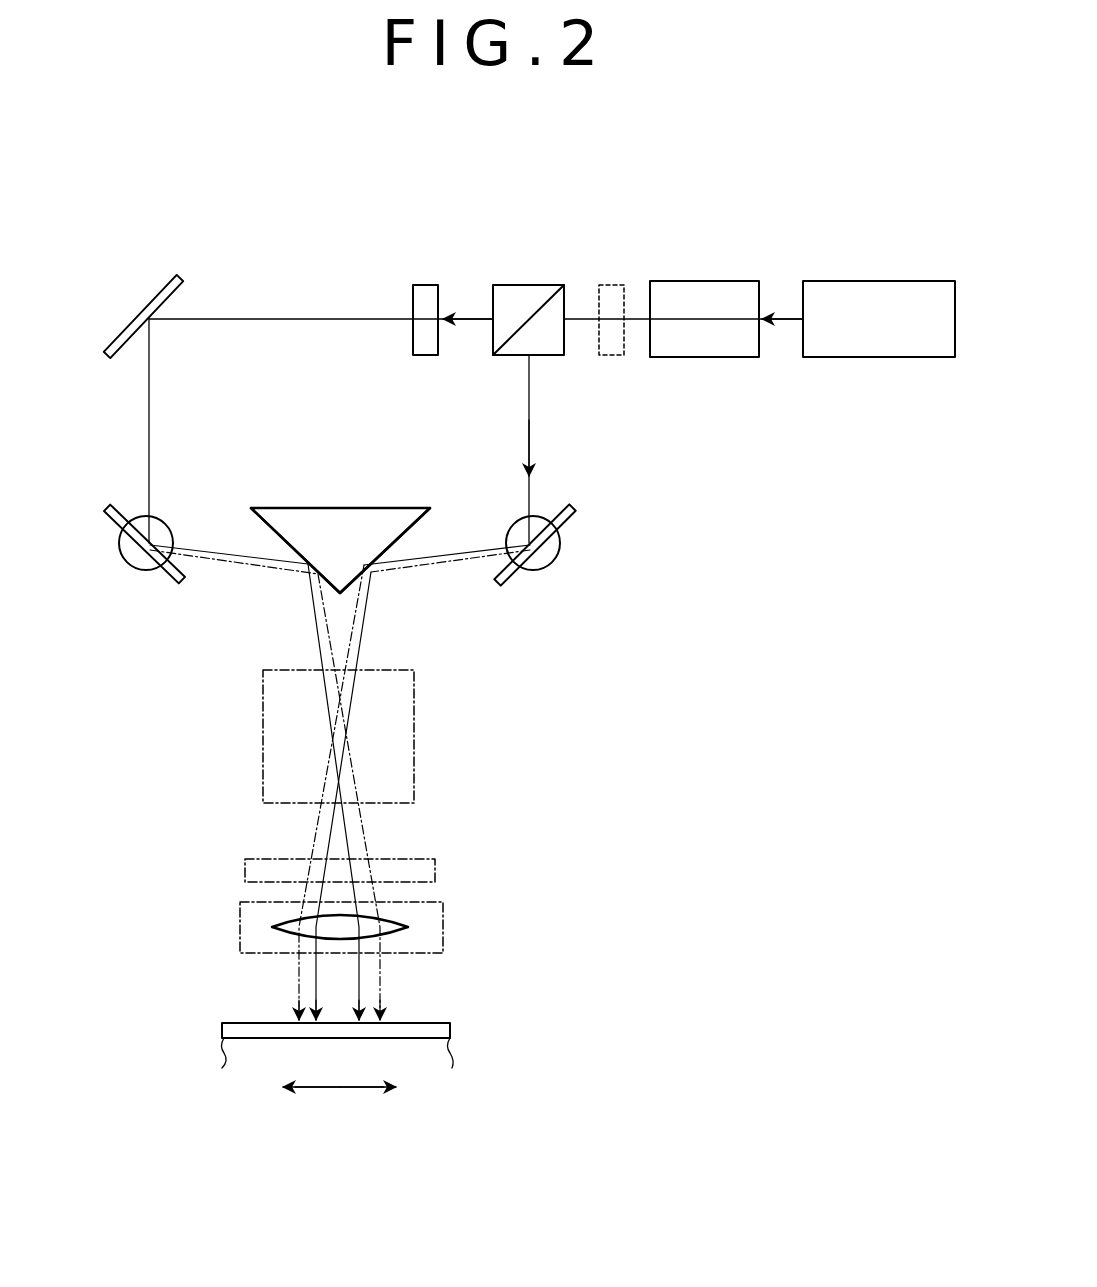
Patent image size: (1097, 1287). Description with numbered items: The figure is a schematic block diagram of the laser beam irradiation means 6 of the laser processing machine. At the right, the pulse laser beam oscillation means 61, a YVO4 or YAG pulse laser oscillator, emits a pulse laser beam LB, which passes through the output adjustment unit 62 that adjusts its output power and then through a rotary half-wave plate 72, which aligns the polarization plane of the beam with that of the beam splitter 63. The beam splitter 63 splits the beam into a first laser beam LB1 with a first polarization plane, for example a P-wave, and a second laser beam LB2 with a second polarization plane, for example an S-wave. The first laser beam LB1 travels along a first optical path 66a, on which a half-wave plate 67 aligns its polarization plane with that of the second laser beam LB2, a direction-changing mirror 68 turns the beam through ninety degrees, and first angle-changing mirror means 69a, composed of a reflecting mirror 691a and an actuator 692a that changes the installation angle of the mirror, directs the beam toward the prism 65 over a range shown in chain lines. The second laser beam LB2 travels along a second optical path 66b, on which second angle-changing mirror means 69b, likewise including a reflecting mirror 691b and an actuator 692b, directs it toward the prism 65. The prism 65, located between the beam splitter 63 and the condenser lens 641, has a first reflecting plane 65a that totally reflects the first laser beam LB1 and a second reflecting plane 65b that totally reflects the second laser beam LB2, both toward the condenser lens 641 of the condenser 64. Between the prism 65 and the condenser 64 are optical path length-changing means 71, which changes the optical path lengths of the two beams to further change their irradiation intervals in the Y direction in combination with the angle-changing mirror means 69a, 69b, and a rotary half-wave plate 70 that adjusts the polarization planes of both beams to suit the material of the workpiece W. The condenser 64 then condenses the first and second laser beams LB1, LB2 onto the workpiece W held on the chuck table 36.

The laser beam irradiation means 6 is at (568, 222).
The pulse laser beam oscillation means 61 is at (888, 281).
The output adjustment unit 62 is at (700, 281).
The beam splitter 63 is at (526, 285).
The condenser 64 is at (448, 928).
The condenser lens 641 is at (272, 927).
The prism 65 is at (328, 505).
The first reflecting plane 65a is at (262, 519).
The second reflecting plane 65b is at (427, 520).
The first optical path 66a is at (300, 295).
The second optical path 66b is at (560, 412).
The half-wave plate 67 is at (425, 285).
The direction-changing mirror 68 is at (150, 300).
The first angle-changing mirror means 69a is at (121, 556).
The second angle-changing mirror means 69b is at (586, 565).
The reflecting mirror 691a is at (114, 505).
The reflecting mirror 691b is at (580, 506).
The actuator 692a is at (121, 553).
The actuator 692b is at (570, 546).
The rotary half-wave plate 70 is at (437, 870).
The optical path length-changing means 71 is at (420, 735).
The rotary half-wave plate 72 is at (610, 285).
The pulse laser beam LB is at (792, 317).
The first laser beam LB1 is at (472, 318).
The second laser beam LB2 is at (529, 395).
The workpiece W is at (432, 1022).
The chuck table 36 is at (447, 1050).
The Y-axial direction Y is at (339, 1105).